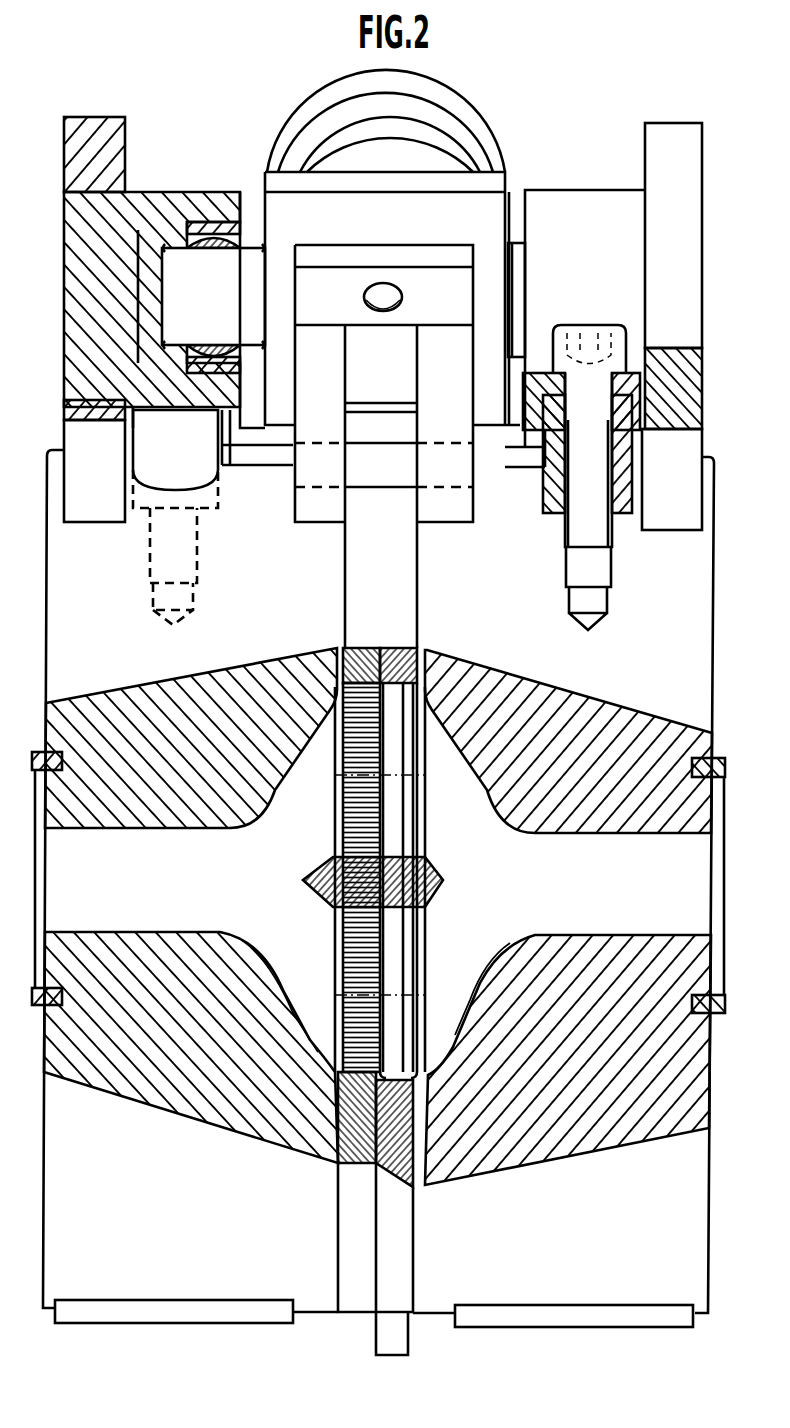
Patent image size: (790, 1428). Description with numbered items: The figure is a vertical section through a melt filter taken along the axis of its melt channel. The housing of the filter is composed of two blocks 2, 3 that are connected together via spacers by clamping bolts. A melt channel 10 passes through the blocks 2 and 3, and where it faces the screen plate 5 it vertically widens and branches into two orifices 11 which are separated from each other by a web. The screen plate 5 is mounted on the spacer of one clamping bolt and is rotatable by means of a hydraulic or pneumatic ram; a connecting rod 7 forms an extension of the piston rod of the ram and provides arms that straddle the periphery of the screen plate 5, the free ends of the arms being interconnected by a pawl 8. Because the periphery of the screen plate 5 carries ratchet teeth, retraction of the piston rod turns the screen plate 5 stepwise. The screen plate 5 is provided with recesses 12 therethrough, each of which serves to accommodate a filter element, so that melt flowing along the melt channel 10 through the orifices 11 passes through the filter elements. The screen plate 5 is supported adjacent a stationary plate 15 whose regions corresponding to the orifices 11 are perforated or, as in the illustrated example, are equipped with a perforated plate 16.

The block 2 is at (673, 596).
The block 3 is at (260, 592).
The screen plate 5 is at (407, 590).
The connecting rod 7 is at (316, 398).
The pawl 8 is at (407, 458).
The melt channel 10 is at (137, 871).
The orifices 11 is at (327, 723).
The recesses 12 is at (392, 1008).
The stationary plate 15 is at (371, 561).
The perforated plate 16 is at (353, 1000).